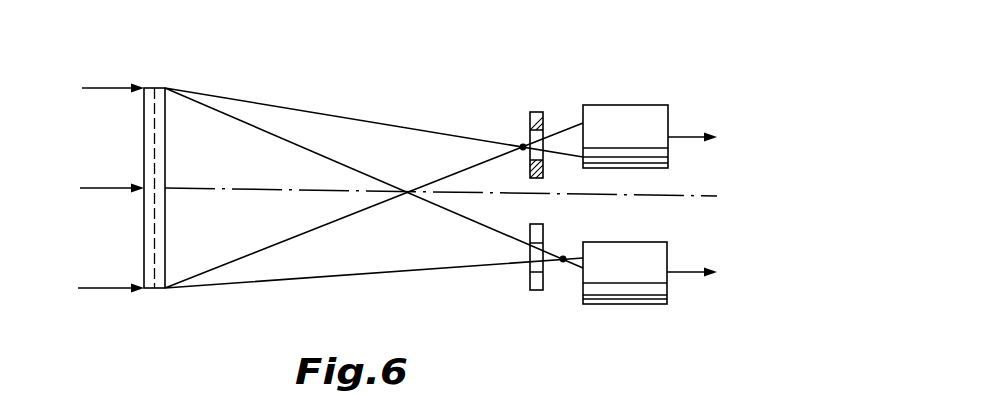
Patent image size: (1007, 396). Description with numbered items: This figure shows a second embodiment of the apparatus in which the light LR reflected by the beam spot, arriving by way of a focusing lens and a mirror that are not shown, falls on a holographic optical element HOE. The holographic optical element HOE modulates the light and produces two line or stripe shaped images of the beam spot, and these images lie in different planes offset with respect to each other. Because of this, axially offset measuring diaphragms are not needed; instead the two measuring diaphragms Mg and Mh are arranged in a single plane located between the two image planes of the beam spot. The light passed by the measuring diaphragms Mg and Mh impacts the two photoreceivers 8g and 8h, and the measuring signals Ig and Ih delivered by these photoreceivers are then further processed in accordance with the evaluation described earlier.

The holographic optical element HOE is at (158, 111).
The light reflected by the beam spot LR is at (91, 88).
The measuring diaphragm Mg is at (536, 112).
The measuring diaphragm Mh is at (534, 290).
The photoreceiver 8g is at (618, 112).
The photoreceiver 8h is at (620, 288).
The measuring signal Ig is at (680, 137).
The measuring signal Ih is at (683, 275).